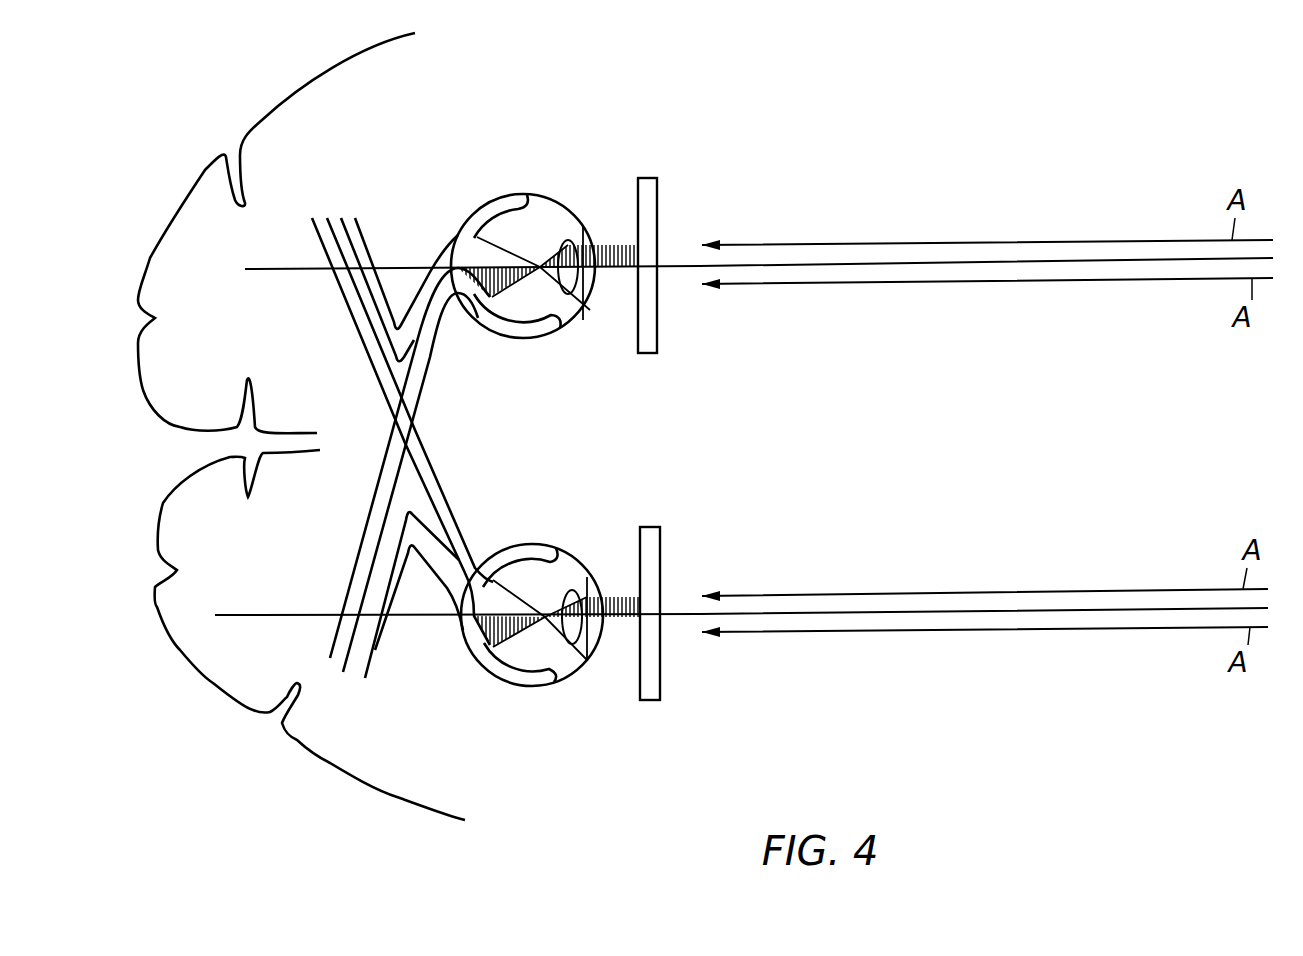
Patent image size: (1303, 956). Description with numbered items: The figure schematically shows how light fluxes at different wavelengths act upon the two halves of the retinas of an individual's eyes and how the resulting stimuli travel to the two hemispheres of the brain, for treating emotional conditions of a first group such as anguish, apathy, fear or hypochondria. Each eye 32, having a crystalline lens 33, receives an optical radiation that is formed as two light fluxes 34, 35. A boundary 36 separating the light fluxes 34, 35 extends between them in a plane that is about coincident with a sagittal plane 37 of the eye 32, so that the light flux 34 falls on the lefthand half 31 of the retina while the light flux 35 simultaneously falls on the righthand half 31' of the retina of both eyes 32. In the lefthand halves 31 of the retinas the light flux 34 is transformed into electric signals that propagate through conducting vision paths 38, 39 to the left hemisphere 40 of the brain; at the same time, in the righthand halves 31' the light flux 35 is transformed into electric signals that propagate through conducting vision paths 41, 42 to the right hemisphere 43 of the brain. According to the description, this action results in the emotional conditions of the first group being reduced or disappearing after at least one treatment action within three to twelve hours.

The lefthand half of the retina 31 is at (527, 417).
The righthand half of the retina 31' is at (517, 521).
The eye 32 is at (567, 191).
The crystalline lens 33 is at (568, 294).
The light flux 34 is at (472, 235).
The light flux 35 is at (618, 245).
The boundary 36 is at (647, 263).
The sagittal plane 37 is at (272, 270).
The conducting vision path 38 is at (360, 212).
The conducting vision path 39 is at (310, 220).
The left hemisphere 40 is at (195, 212).
The conducting vision path 41 is at (330, 650).
The conducting vision path 42 is at (375, 650).
The right hemisphere 43 is at (403, 785).